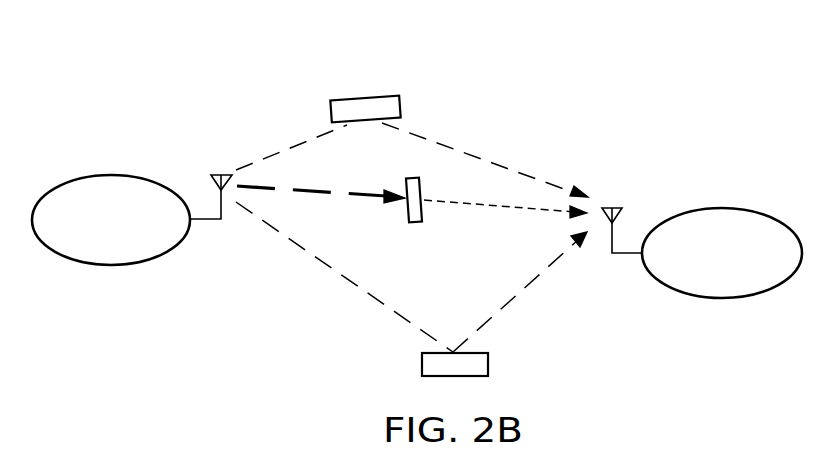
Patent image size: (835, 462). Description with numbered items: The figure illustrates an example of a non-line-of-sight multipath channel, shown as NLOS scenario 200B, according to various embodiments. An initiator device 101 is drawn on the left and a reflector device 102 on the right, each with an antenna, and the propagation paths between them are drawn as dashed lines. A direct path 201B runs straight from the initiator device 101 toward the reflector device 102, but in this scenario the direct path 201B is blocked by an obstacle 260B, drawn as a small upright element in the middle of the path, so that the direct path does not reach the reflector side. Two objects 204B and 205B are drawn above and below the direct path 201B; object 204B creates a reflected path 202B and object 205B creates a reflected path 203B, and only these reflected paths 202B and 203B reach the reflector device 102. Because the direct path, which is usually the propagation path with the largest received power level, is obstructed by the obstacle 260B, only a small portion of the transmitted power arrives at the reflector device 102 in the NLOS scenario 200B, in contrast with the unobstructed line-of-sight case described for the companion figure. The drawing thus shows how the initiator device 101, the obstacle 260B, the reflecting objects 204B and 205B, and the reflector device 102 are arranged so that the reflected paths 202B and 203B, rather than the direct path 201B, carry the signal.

The NLOS scenario 200B is at (667, 67).
The initiator device 101 is at (108, 266).
The reflector device 102 is at (722, 298).
The direct path 201B is at (310, 192).
The reflected path 202B is at (468, 155).
The reflected path 203B is at (533, 280).
The object 204B is at (363, 97).
The object 205B is at (420, 363).
The obstacle 260B is at (424, 212).